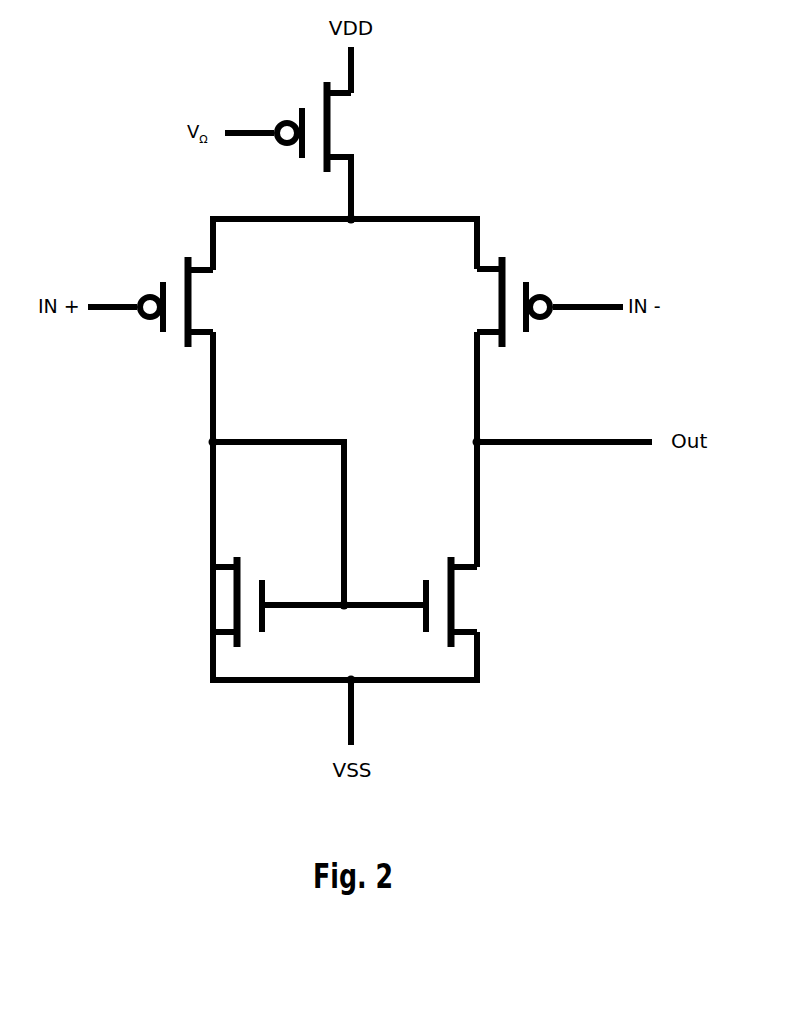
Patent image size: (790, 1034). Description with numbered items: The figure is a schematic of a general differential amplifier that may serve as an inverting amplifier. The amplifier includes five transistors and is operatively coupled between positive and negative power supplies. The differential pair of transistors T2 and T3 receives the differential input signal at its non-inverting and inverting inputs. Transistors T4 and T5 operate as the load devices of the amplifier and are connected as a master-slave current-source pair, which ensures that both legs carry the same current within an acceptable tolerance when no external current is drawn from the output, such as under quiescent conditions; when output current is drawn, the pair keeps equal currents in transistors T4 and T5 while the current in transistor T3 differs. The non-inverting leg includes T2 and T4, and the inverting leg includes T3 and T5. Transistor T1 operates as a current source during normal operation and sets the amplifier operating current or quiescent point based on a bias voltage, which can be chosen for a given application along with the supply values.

The transistor T1 is at (296, 150).
The transistor T2 is at (156, 302).
The transistor T3 is at (541, 302).
The transistor T4 is at (231, 602).
The transistor T5 is at (458, 602).